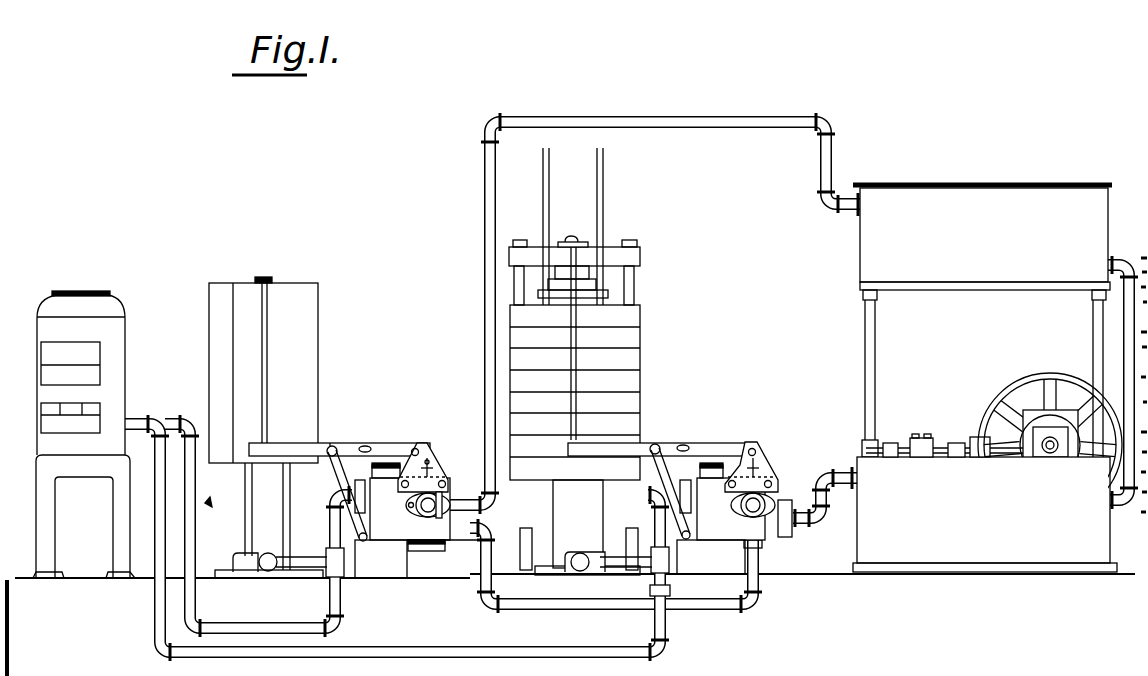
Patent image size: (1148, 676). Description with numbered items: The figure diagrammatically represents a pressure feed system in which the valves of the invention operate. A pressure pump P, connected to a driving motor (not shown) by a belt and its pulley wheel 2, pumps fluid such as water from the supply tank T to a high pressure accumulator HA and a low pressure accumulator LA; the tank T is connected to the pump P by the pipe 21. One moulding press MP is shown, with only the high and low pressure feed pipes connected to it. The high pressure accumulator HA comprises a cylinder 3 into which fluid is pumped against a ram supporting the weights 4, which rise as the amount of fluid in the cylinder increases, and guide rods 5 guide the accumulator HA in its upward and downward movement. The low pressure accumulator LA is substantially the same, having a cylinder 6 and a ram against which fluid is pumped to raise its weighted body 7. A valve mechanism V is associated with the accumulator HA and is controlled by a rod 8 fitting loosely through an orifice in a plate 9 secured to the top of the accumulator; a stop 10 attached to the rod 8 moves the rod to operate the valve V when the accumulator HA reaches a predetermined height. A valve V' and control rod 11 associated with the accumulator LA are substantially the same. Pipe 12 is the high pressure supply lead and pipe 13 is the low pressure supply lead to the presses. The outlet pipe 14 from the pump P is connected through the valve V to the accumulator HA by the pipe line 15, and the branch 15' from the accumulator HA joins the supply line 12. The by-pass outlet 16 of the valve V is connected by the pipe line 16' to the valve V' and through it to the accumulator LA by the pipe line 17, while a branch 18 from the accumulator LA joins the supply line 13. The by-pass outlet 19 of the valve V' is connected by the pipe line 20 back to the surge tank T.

The moulding press MP is at (113, 381).
The weighted body 7 is at (276, 373).
The low pressure accumulator LA is at (303, 398).
The control rod 11 is at (266, 336).
The cylinder 6 is at (250, 510).
The pipe line 20 is at (483, 299).
The pipe line 17 is at (330, 532).
The branch 18 is at (338, 600).
The low pressure supply lead 13 is at (266, 626).
The high pressure supply lead 12 is at (470, 653).
The by-pass outlet 19 is at (433, 512).
The valve V' is at (432, 480).
The valve mechanism V is at (760, 479).
The cylinder 3 is at (586, 527).
The high pressure accumulator HA is at (635, 362).
The weights 4 is at (633, 425).
The guide rods 5 is at (597, 178).
The plate 9 is at (590, 245).
The stop 10 is at (566, 243).
The rod 8 is at (577, 357).
The pipe line 15 is at (644, 530).
The branch 15' is at (676, 585).
The by-pass outlet 16 is at (776, 564).
The pipe line 16' is at (606, 580).
The outlet pipe 14 is at (825, 469).
The supply tank T is at (987, 206).
The pipe 21 is at (1130, 325).
The pulley wheel 2 is at (1035, 376).
The pressure pump P is at (932, 477).